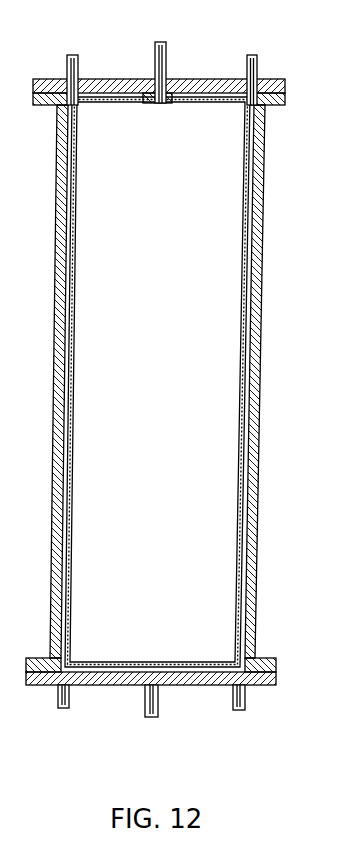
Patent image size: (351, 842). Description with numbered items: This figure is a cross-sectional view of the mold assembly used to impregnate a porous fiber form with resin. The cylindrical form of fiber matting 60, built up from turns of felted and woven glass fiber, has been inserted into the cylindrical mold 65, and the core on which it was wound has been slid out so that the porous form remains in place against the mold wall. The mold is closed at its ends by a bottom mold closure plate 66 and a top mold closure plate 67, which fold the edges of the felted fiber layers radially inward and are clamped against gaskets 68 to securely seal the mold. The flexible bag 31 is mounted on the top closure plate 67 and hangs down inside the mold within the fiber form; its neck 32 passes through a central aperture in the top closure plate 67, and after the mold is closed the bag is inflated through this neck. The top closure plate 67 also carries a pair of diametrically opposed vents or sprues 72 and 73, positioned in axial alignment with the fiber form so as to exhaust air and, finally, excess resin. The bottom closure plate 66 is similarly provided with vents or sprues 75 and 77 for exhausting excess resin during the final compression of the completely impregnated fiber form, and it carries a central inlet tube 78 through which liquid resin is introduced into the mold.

The flexible bag 31 is at (78, 293).
The neck 32 is at (162, 50).
The cylindrical form of fiber matting 60 is at (55, 270).
The cylindrical mold 65 is at (53, 547).
The bottom mold closure plate 66 is at (182, 686).
The top mold closure plate 67 is at (136, 79).
The gaskets 68 is at (280, 104).
The vent or sprue 72 is at (66, 64).
The vent or sprue 73 is at (256, 62).
The vent or sprue 75 is at (247, 709).
The vent or sprue 77 is at (58, 701).
The central inlet tube 78 is at (152, 720).